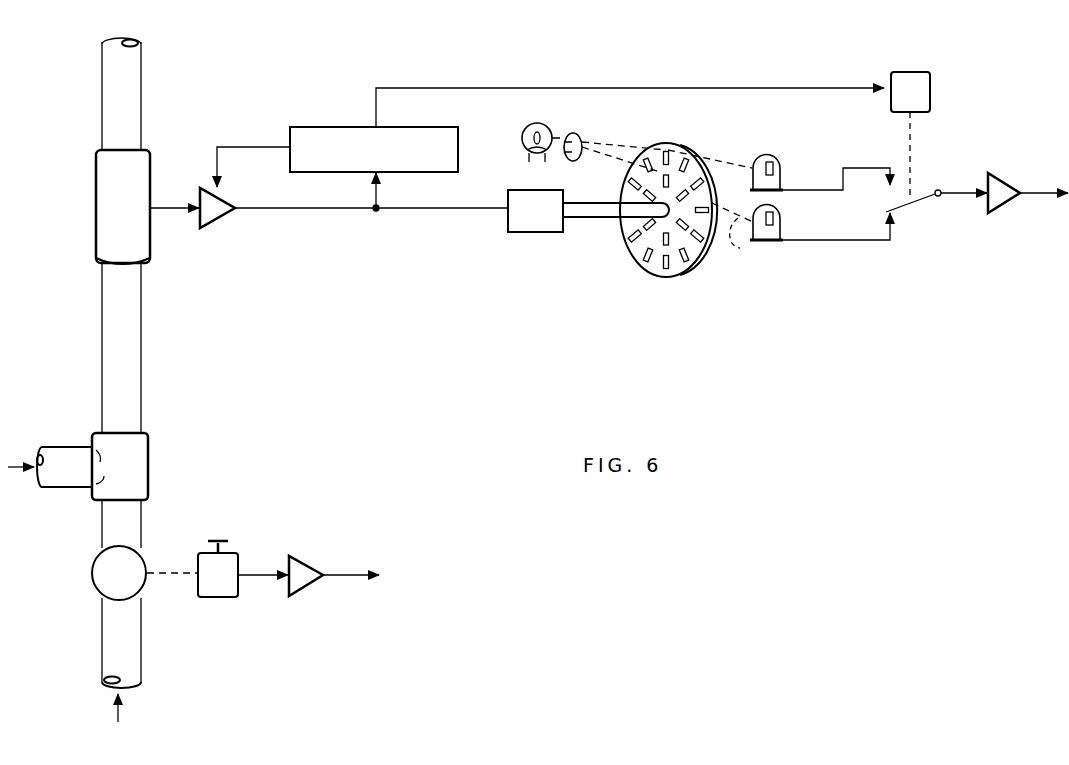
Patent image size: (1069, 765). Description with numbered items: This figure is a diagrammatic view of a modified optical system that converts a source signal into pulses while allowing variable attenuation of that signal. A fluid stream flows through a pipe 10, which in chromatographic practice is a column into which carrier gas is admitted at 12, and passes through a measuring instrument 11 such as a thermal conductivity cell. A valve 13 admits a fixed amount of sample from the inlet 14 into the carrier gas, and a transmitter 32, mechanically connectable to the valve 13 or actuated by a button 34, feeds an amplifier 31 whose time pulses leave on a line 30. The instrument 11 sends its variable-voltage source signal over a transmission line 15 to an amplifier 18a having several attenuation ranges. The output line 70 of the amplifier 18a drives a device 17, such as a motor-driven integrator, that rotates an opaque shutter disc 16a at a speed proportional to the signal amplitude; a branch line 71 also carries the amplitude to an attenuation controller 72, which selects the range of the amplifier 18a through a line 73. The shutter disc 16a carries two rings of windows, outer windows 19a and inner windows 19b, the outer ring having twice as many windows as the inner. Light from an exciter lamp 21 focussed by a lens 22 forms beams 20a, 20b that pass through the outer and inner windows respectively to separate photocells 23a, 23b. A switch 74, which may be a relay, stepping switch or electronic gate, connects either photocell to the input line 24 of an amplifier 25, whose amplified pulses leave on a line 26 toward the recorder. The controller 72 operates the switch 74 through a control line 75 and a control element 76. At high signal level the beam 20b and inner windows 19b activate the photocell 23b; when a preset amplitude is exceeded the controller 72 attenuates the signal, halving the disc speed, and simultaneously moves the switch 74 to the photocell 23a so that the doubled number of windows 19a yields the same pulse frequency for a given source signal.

The pipe 10 is at (133, 350).
The measuring instrument 11 is at (104, 180).
The carrier gas admission 12 is at (72, 452).
The valve 13 is at (100, 582).
The inlet 14 is at (131, 668).
The transmission line 15 is at (160, 204).
The shutter disc 16a is at (650, 258).
The drive device 17 is at (541, 227).
The amplifier 18a is at (222, 212).
The outer ring windows 19a is at (668, 268).
The inner ring windows 19b is at (669, 240).
The outer light beam 20a is at (714, 157).
The inner light beam 20b is at (746, 232).
The exciter lamp 21 is at (531, 128).
The lens 22 is at (578, 136).
The photocell 23a is at (780, 170).
The photocell 23b is at (781, 232).
The input line 24 is at (958, 190).
The amplifier 25 is at (1000, 205).
The line 26 is at (1030, 192).
The line 30 is at (336, 574).
The amplifier 31 is at (305, 582).
The transmitter 32 is at (226, 590).
The button 34 is at (218, 540).
The output line 70 is at (400, 211).
The branch line 71 is at (375, 195).
The attenuation controller 72 is at (348, 127).
The line 73 is at (251, 146).
The switch 74 is at (912, 201).
The control line 75 is at (608, 88).
The control element 76 is at (914, 72).